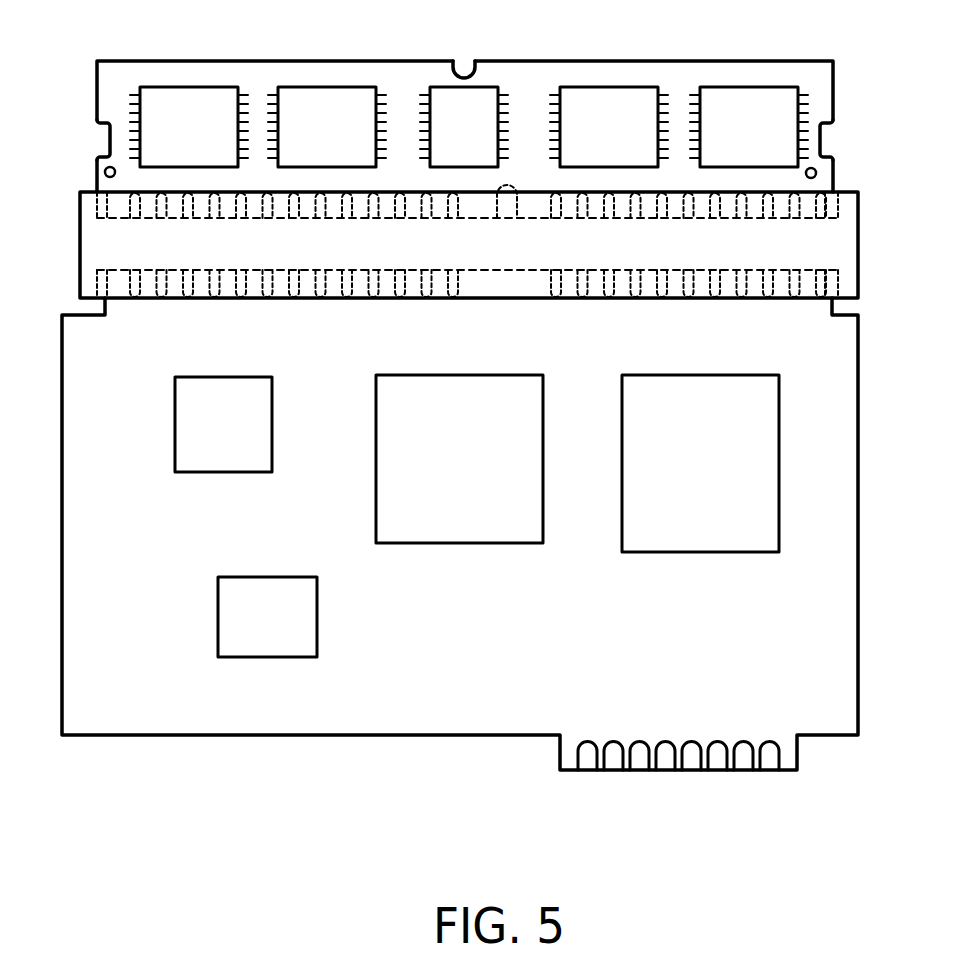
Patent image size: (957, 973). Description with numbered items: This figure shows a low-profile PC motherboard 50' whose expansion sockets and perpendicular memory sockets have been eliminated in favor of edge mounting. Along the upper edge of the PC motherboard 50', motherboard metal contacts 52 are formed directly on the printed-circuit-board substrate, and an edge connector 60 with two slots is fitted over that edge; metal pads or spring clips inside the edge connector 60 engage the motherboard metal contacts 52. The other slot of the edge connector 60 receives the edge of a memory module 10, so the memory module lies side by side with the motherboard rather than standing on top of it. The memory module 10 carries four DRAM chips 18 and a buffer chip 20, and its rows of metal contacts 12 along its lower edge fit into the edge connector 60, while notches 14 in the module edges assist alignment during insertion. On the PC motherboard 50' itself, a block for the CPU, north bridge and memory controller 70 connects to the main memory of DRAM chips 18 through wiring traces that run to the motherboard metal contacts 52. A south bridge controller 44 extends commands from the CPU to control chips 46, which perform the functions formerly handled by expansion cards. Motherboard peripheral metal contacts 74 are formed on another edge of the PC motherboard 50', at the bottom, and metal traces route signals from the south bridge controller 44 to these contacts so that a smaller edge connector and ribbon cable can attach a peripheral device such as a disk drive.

The memory module 10 is at (516, 104).
The metal contacts 12 is at (573, 192).
The notches 14 is at (97, 125).
The DRAM chips 18 is at (176, 152).
The buffer chip 20 is at (451, 152).
The south bridge controller 44 is at (709, 529).
The control chips 46 is at (211, 442).
The PC motherboard 50' is at (460, 534).
The motherboard metal contacts 52 is at (408, 298).
The edge connector 60 is at (194, 259).
The CPU & north bridge / memory controller 70 is at (491, 426).
The motherboard peripheral metal contacts 74 is at (668, 743).